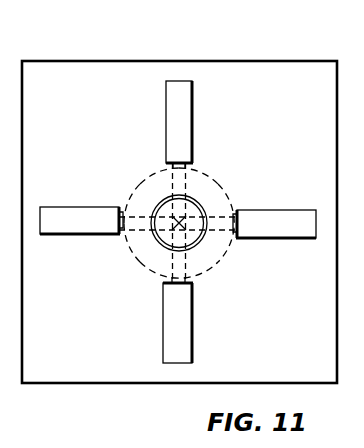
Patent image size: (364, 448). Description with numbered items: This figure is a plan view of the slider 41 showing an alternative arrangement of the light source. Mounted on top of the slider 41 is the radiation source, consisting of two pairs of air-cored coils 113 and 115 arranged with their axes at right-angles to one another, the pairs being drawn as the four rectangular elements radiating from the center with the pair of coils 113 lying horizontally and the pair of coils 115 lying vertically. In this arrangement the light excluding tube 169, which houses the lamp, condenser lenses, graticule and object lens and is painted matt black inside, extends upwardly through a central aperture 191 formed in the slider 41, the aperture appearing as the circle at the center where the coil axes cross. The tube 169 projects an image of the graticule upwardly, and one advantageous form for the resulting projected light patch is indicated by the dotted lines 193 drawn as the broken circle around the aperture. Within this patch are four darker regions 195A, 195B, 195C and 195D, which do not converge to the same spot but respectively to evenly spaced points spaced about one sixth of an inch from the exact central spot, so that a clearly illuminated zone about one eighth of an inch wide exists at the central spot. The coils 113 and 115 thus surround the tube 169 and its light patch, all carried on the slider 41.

The slider 41 is at (142, 386).
The pair of air-cored coils 113 is at (60, 228).
The pair of air-cored coils 115 is at (188, 81).
The light excluding tube 169 is at (226, 194).
The central aperture 191 is at (203, 210).
The dotted lines 193 is at (128, 250).
The darker region 195A is at (166, 175).
The darker region 195B is at (134, 195).
The darker region 195C is at (160, 275).
The darker region 195D is at (235, 262).